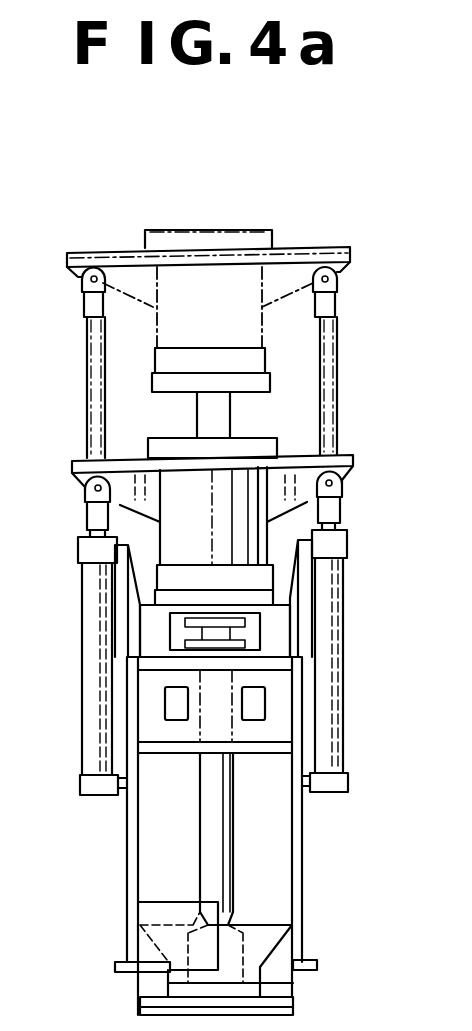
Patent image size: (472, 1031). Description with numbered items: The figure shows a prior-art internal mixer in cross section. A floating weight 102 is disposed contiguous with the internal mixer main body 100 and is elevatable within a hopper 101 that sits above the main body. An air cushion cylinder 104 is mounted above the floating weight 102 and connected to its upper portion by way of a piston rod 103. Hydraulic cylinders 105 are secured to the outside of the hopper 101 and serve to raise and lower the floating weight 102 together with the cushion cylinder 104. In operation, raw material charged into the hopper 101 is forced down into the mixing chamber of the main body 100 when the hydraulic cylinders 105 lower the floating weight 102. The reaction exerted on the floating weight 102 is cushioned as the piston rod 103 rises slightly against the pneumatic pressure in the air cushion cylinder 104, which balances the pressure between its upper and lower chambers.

The internal mixer main body 100 is at (217, 208).
The hopper 101 is at (302, 925).
The floating weight 102 is at (283, 987).
The piston rod 103 is at (232, 870).
The air cushion cylinder 104 is at (273, 236).
The hydraulic cylinders 105 is at (82, 618).